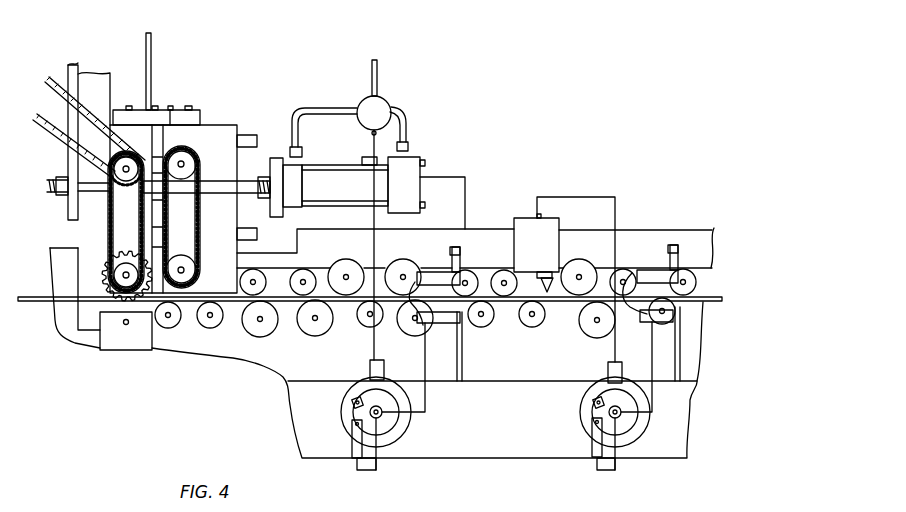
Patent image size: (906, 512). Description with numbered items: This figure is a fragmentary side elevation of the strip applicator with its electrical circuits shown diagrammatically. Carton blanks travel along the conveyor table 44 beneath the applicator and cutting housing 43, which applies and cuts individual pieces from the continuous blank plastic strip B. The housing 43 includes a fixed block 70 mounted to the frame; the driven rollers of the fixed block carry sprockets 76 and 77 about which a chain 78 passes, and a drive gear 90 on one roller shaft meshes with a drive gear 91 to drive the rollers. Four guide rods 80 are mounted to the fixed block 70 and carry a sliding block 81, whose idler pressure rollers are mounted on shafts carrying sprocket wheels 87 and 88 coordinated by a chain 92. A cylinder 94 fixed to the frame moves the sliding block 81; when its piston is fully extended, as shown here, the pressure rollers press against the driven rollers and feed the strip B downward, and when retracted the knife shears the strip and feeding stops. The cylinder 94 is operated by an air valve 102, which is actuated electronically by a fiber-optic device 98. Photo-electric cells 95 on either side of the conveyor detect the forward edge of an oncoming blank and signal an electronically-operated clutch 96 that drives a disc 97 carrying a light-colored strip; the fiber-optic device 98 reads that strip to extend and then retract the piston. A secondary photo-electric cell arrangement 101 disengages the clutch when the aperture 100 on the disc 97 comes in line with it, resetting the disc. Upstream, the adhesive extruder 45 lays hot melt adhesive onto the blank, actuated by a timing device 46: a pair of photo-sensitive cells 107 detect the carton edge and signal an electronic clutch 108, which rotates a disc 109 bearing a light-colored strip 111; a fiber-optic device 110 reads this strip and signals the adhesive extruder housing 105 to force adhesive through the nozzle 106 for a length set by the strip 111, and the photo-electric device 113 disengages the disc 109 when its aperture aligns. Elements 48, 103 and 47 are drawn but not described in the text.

The fixed block 70 is at (127, 133).
The blank plastic strip B is at (152, 73).
The applicator and cutting housing 43 is at (197, 212).
The sprocket wheel 87 is at (189, 150).
The sliding block 81 is at (231, 139).
The guide rods 80 is at (253, 143).
The sprocket 76 is at (113, 162).
The chain 78 is at (107, 230).
The sprocket 77 is at (123, 274).
The chain 92 is at (197, 238).
The sprocket wheel 88 is at (186, 282).
The drive gear 90 is at (104, 294).
The drive gear 91 is at (118, 314).
The conveyor table 44 is at (273, 360).
The cylinder 94 is at (332, 183).
The air valve 102 is at (385, 112).
The valve block 48 is at (413, 164).
The adhesive extruder 45 is at (522, 224).
The nozzle 106 is at (552, 284).
The adhesive extruder housing 105 is at (550, 232).
The photo-sensitive cells 107 is at (650, 278).
The photo-electric cells 95 is at (433, 276).
The rollers 103 is at (533, 316).
The fiber-optic device 98 is at (370, 373).
The disc 97 is at (404, 419).
The electronically-operated clutch 96 is at (382, 417).
The aperture 100 is at (355, 404).
The secondary photo-electric cell arrangement 101 is at (352, 458).
The wheel assembly 47 is at (382, 320).
The fiber-optic device 110 is at (607, 369).
The disc 109 is at (645, 425).
The electronic clutch 108 is at (608, 412).
The light-colored strip 111 is at (595, 402).
The photo-electric device 113 is at (572, 458).
The timing device 46 is at (618, 416).